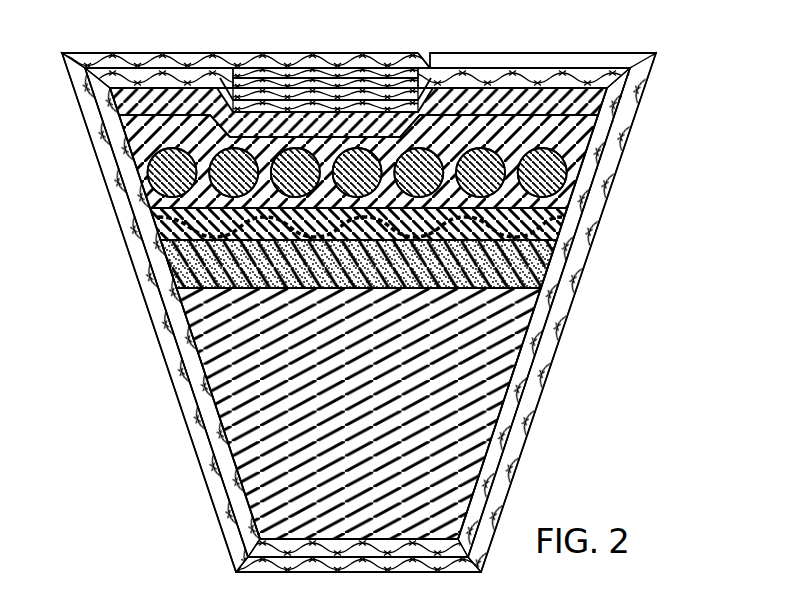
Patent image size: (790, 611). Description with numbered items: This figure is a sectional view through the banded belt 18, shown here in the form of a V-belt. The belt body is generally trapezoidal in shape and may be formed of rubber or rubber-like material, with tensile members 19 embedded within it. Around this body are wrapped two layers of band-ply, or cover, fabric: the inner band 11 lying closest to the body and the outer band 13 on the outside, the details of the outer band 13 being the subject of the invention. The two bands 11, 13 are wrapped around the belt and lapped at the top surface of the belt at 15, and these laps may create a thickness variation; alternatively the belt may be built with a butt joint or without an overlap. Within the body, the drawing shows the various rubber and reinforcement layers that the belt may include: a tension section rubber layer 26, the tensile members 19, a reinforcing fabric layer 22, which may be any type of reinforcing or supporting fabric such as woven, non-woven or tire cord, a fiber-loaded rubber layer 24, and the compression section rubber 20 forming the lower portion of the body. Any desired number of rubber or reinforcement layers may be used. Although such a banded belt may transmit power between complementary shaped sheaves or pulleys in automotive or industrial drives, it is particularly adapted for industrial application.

The banded belt 18 is at (712, 86).
The inner band 11 is at (612, 106).
The outer band 13 is at (103, 167).
The lap 15 is at (340, 104).
The tension section rubber layer 26 is at (112, 87).
The tensile members 19 is at (548, 176).
The reinforcing fabric layer 22 is at (160, 230).
The fiber-loaded rubber layer 24 is at (160, 278).
The compression section rubber 20 is at (237, 402).